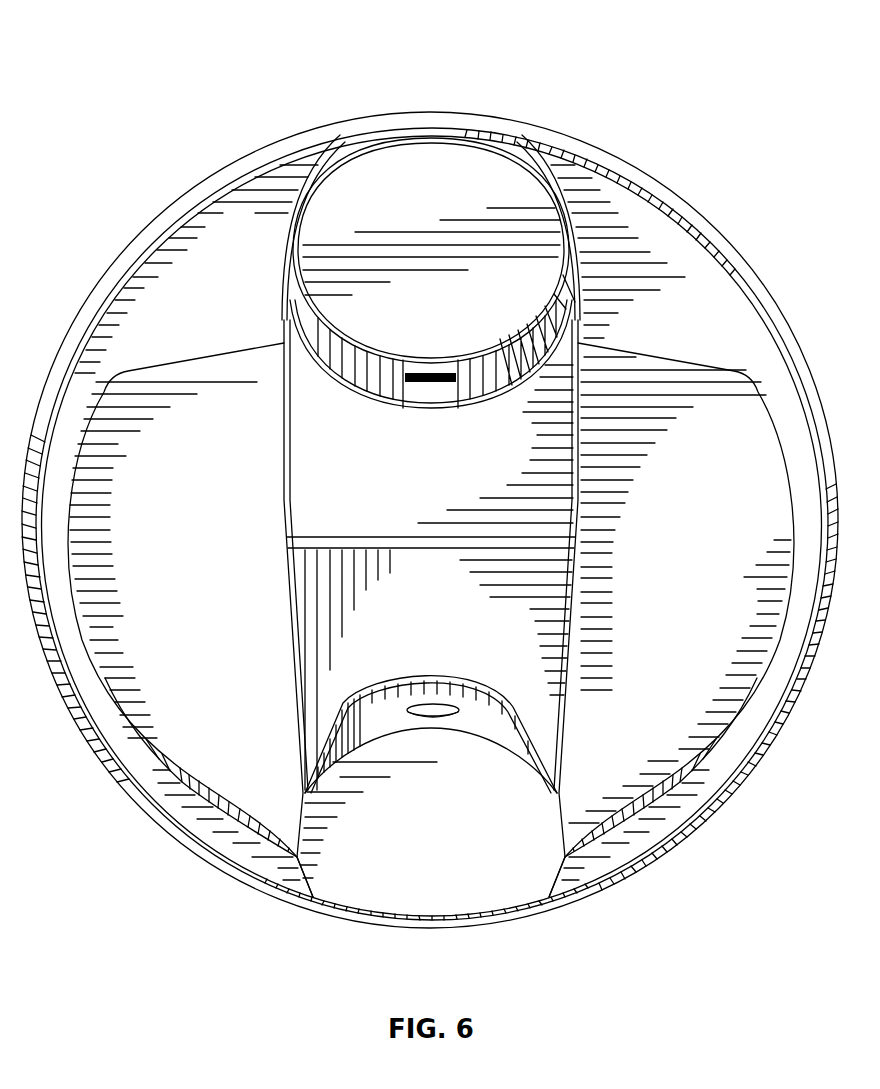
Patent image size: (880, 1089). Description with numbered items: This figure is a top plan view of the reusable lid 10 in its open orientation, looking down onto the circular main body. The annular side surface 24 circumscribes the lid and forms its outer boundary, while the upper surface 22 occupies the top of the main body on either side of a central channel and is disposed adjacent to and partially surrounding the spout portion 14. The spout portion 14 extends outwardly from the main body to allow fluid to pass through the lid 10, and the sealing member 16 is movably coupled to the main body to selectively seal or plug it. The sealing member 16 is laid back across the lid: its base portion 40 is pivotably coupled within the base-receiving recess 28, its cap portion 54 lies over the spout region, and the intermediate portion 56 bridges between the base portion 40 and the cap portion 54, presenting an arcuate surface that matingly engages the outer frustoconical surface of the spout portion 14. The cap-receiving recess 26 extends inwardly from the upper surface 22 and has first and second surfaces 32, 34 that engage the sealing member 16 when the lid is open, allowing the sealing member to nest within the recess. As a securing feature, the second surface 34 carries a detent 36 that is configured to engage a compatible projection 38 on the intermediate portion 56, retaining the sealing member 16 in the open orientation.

The lid 10 is at (243, 49).
The spout portion 14 is at (372, 140).
The sealing member 16 is at (430, 165).
The upper surface 22 is at (195, 293).
The side surface 24 is at (451, 106).
The cap-receiving recess 26 is at (474, 866).
The base-receiving recess 28 is at (548, 612).
The first surface 32 is at (390, 875).
The second surface 34 is at (363, 730).
The detent 36 is at (436, 705).
The projection 38 is at (430, 381).
The base portion 40 is at (300, 485).
The cap portion 54 is at (497, 172).
The intermediate portion 56 is at (302, 335).